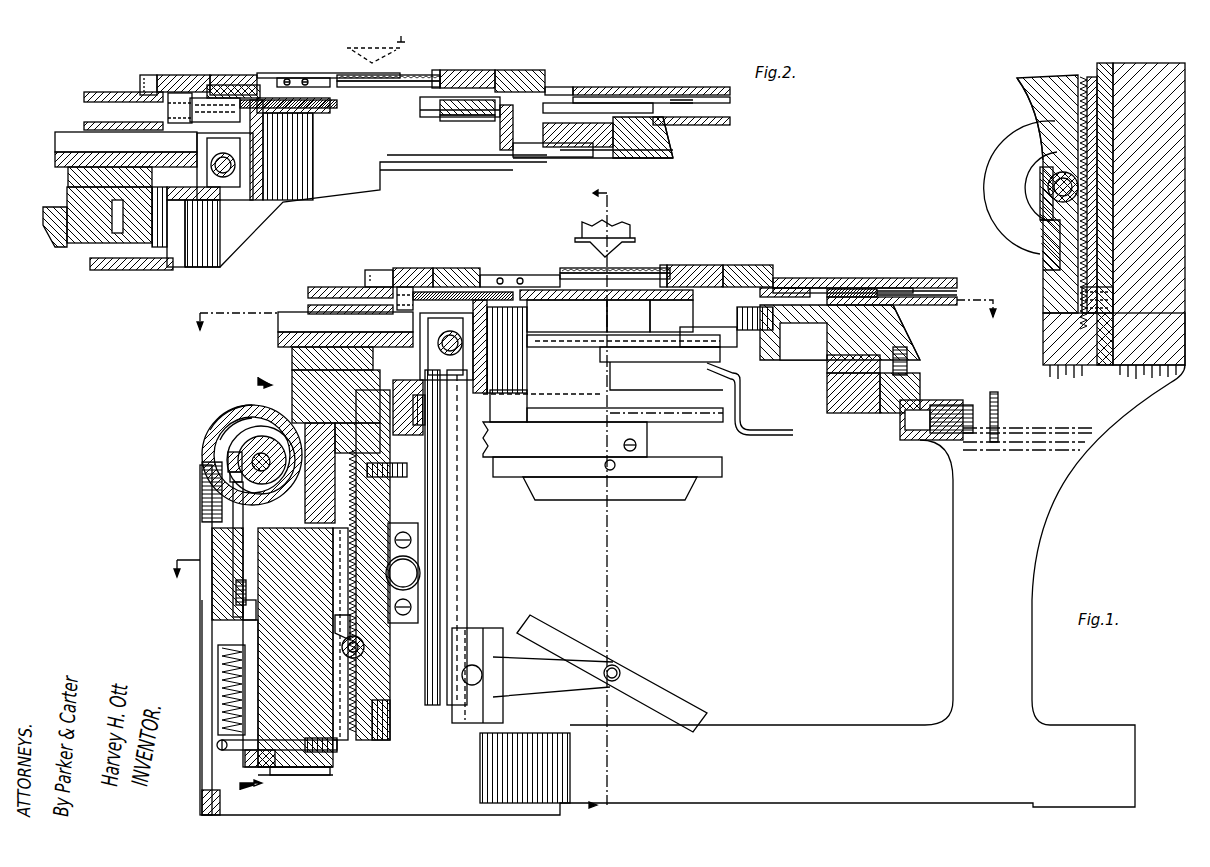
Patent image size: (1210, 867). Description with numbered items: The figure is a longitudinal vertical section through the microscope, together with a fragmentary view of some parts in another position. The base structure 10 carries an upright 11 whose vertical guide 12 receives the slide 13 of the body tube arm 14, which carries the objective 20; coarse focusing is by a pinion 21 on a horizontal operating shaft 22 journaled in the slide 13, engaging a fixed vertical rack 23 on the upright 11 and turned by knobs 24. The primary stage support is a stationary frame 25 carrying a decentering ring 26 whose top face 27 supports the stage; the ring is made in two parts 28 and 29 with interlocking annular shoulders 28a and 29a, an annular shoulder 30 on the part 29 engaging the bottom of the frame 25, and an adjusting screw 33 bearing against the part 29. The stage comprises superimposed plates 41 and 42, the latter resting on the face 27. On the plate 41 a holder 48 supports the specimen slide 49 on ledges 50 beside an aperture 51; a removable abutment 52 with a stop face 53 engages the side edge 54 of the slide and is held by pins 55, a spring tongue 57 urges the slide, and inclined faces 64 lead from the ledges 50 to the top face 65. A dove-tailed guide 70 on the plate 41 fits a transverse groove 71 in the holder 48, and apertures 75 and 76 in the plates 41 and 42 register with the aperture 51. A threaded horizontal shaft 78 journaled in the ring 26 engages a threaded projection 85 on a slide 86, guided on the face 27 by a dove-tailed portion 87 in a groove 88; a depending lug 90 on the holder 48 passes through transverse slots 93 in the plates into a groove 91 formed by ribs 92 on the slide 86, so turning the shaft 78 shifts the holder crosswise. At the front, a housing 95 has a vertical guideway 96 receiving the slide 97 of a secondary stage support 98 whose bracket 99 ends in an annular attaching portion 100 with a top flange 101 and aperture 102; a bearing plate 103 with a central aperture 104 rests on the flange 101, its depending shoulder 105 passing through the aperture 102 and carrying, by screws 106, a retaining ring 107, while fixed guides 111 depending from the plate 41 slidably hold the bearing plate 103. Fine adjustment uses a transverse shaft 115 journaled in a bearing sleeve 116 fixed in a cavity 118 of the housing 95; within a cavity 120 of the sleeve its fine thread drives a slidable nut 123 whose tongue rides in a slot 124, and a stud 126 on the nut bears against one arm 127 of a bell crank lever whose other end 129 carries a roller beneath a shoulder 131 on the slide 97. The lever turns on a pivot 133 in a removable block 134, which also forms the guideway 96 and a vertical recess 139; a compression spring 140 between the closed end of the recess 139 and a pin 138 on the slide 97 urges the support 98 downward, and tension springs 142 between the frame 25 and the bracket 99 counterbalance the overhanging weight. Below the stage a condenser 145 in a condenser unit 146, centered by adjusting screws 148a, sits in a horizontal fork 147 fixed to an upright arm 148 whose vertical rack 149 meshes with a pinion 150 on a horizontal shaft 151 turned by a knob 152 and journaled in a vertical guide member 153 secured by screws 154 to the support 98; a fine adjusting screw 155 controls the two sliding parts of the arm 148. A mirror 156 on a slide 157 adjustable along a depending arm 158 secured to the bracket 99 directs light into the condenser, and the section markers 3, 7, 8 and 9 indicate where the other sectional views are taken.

In FIG. 2, the base structure 10 is at (442, 208).
In FIG. 1, the base structure 10 is at (693, 517).
In FIG. 1, the arm or upright 11 is at (1165, 63).
In FIG. 1, the vertical guide 12 is at (1105, 63).
In FIG. 1, the slide 13 is at (1045, 75).
In FIG. 1, the body tube arm 14 is at (1020, 98).
In FIG. 2, the objective 20 is at (405, 42).
In FIG. 1, the objective 20 is at (625, 232).
In FIG. 1, the pinion 21 is at (1045, 185).
In FIG. 1, the horizontal operating shaft 22 is at (1048, 187).
In FIG. 1, the vertical rack 23 is at (1083, 77).
In FIG. 1, the knobs 24 is at (1000, 210).
In FIG. 2, the horizontal frame or ring 25 is at (55, 215).
In FIG. 1, the horizontal frame or ring 25 is at (920, 388).
In FIG. 2, the decentering ring 26 is at (675, 144).
In FIG. 1, the decentering ring 26 is at (912, 333).
In FIG. 2, the top horizontal face 27 is at (660, 150).
In FIG. 1, the top horizontal face 27 is at (875, 305).
In FIG. 2, the upper part of decentering ring 28 is at (553, 152).
In FIG. 1, the upper part of decentering ring 28 is at (803, 341).
In FIG. 1, the interlocking annular shoulder 28a is at (907, 357).
In FIG. 2, the lower part of decentering ring 29 is at (90, 262).
In FIG. 1, the lower part of decentering ring 29 is at (832, 393).
In FIG. 1, the interlocking annular shoulder 29a is at (827, 370).
In FIG. 1, the annular shoulder 30 is at (905, 432).
In FIG. 1, the adjusting screw 33 is at (960, 445).
In FIG. 2, the upper stage plate 41 is at (700, 87).
In FIG. 1, the upper stage plate 41 is at (945, 278).
In FIG. 2, the lower stage plate 42 is at (730, 121).
In FIG. 1, the lower stage plate 42 is at (950, 297).
In FIG. 2, the holder 48 is at (548, 87).
In FIG. 1, the holder 48 is at (380, 270).
In FIG. 2, the slide 49 is at (405, 75).
In FIG. 1, the slide 49 is at (580, 268).
In FIG. 2, the horizontal ledges 50 is at (340, 81).
In FIG. 1, the horizontal ledges 50 is at (580, 273).
In FIG. 1, the aperture 51 is at (500, 278).
In FIG. 2, the abutment 52 is at (490, 70).
In FIG. 1, the abutment 52 is at (688, 265).
In FIG. 2, the stop face 53 is at (440, 72).
In FIG. 1, the stop face 53 is at (665, 265).
In FIG. 2, the side edge 54 is at (445, 113).
In FIG. 2, the pins 55 is at (518, 70).
In FIG. 2, the spring tongue 57 is at (293, 78).
In FIG. 1, the spring tongue 57 is at (520, 278).
In FIG. 2, the inclined faces 64 is at (262, 73).
In FIG. 1, the inclined faces 64 is at (490, 275).
In FIG. 2, the top face 65 is at (172, 75).
In FIG. 1, the top face 65 is at (433, 268).
In FIG. 2, the dove-tailed guide 70 is at (222, 75).
In FIG. 1, the dove-tailed guide 70 is at (452, 268).
In FIG. 2, the transverse groove 71 is at (188, 93).
In FIG. 1, the aperture 75 is at (628, 316).
In FIG. 2, the aperture 76 is at (590, 123).
In FIG. 1, the aperture 76 is at (755, 330).
In FIG. 2, the horizontal shaft 78 is at (240, 180).
In FIG. 1, the horizontal shaft 78 is at (447, 334).
In FIG. 2, the threaded projection 85 is at (225, 166).
In FIG. 1, the threaded projection 85 is at (473, 346).
In FIG. 2, the slide 86 is at (55, 158).
In FIG. 1, the slide 86 is at (278, 340).
In FIG. 2, the dove-tailed portion 87 is at (140, 185).
In FIG. 1, the dove-tailed portion 87 is at (345, 370).
In FIG. 2, the undercut groove or guideway 88 is at (68, 172).
In FIG. 1, the undercut groove or guideway 88 is at (292, 358).
In FIG. 2, the depending lug 90 is at (150, 75).
In FIG. 1, the depending lug 90 is at (397, 322).
In FIG. 2, the groove 91 is at (126, 142).
In FIG. 1, the groove 91 is at (278, 323).
In FIG. 2, the ribs or walls 92 is at (84, 126).
In FIG. 2, the transverse slots 93 is at (84, 97).
In FIG. 1, the transverse slots 93 is at (380, 287).
In FIG. 1, the housing 95 is at (228, 425).
In FIG. 1, the vertical guideway 96 is at (300, 775).
In FIG. 1, the slide 97 is at (250, 758).
In FIG. 1, the secondary stage support 98 is at (290, 618).
In FIG. 2, the bracket 99 is at (175, 253).
In FIG. 1, the bracket 99 is at (380, 453).
In FIG. 2, the annular attaching portion 100 is at (380, 190).
In FIG. 1, the annular attaching portion 100 is at (708, 337).
In FIG. 2, the top flange 101 is at (500, 120).
In FIG. 2, the circular aperture 102 is at (287, 125).
In FIG. 2, the bearing plate 103 is at (600, 97).
In FIG. 1, the bearing plate 103 is at (785, 288).
In FIG. 2, the central circular aperture 104 is at (340, 104).
In FIG. 1, the central circular aperture 104 is at (620, 327).
In FIG. 1, the depending annular shoulder 105 is at (735, 268).
In FIG. 1, the screws 106 is at (671, 316).
In FIG. 2, the retaining ring 107 is at (460, 121).
In FIG. 1, the retaining ring 107 is at (700, 347).
In FIG. 2, the fixed guides 111 is at (696, 108).
In FIG. 1, the fixed guides 111 is at (845, 288).
In FIG. 1, the transverse shaft 115 is at (225, 440).
In FIG. 1, the bearing sleeve 116 is at (273, 480).
In FIG. 1, the transverse recess or cavity 118 is at (255, 406).
In FIG. 1, the cavity 120 is at (228, 455).
In FIG. 1, the slidable nut 123 is at (200, 478).
In FIG. 1, the slot 124 is at (261, 475).
In FIG. 1, the stud 126 is at (230, 475).
In FIG. 1, the lever arm 127 is at (205, 500).
In FIG. 1, the lever end 129 is at (243, 612).
In FIG. 1, the projection or shoulder 131 is at (238, 530).
In FIG. 1, the pivot 133 is at (236, 590).
In FIG. 1, the removable block 134 is at (212, 548).
In FIG. 1, the pin or projection 138 is at (225, 760).
In FIG. 1, the vertical recess 139 is at (220, 673).
In FIG. 1, the compression spring 140 is at (218, 700).
In FIG. 1, the tension springs 142 is at (603, 445).
In FIG. 1, the condenser 145 is at (567, 316).
In FIG. 1, the condenser unit 146 is at (710, 445).
In FIG. 1, the horizontal fork 147 is at (607, 453).
In FIG. 1, the upright arm 148 is at (440, 551).
In FIG. 1, the adjusting screws 148a is at (614, 470).
In FIG. 1, the vertical rack 149 is at (350, 625).
In FIG. 1, the pinion 150 is at (390, 700).
In FIG. 1, the horizontal shaft 151 is at (364, 660).
In FIG. 1, the operating knob 152 is at (340, 740).
In FIG. 1, the vertical guide member 153 is at (381, 740).
In FIG. 1, the screws 154 is at (385, 477).
In FIG. 1, the fine adjusting screw 155 is at (420, 575).
In FIG. 1, the mirror or reflector 156 is at (600, 673).
In FIG. 1, the slide 157 is at (503, 717).
In FIG. 1, the depending arm 158 is at (467, 523).
In FIG. 1, the section line 3- 3 is at (588, 494).
In FIG. 1, the section line 7- 7 is at (600, 326).
In FIG. 1, the section line 8- 8 is at (259, 588).
In FIG. 1, the section line 9- 9 is at (176, 571).